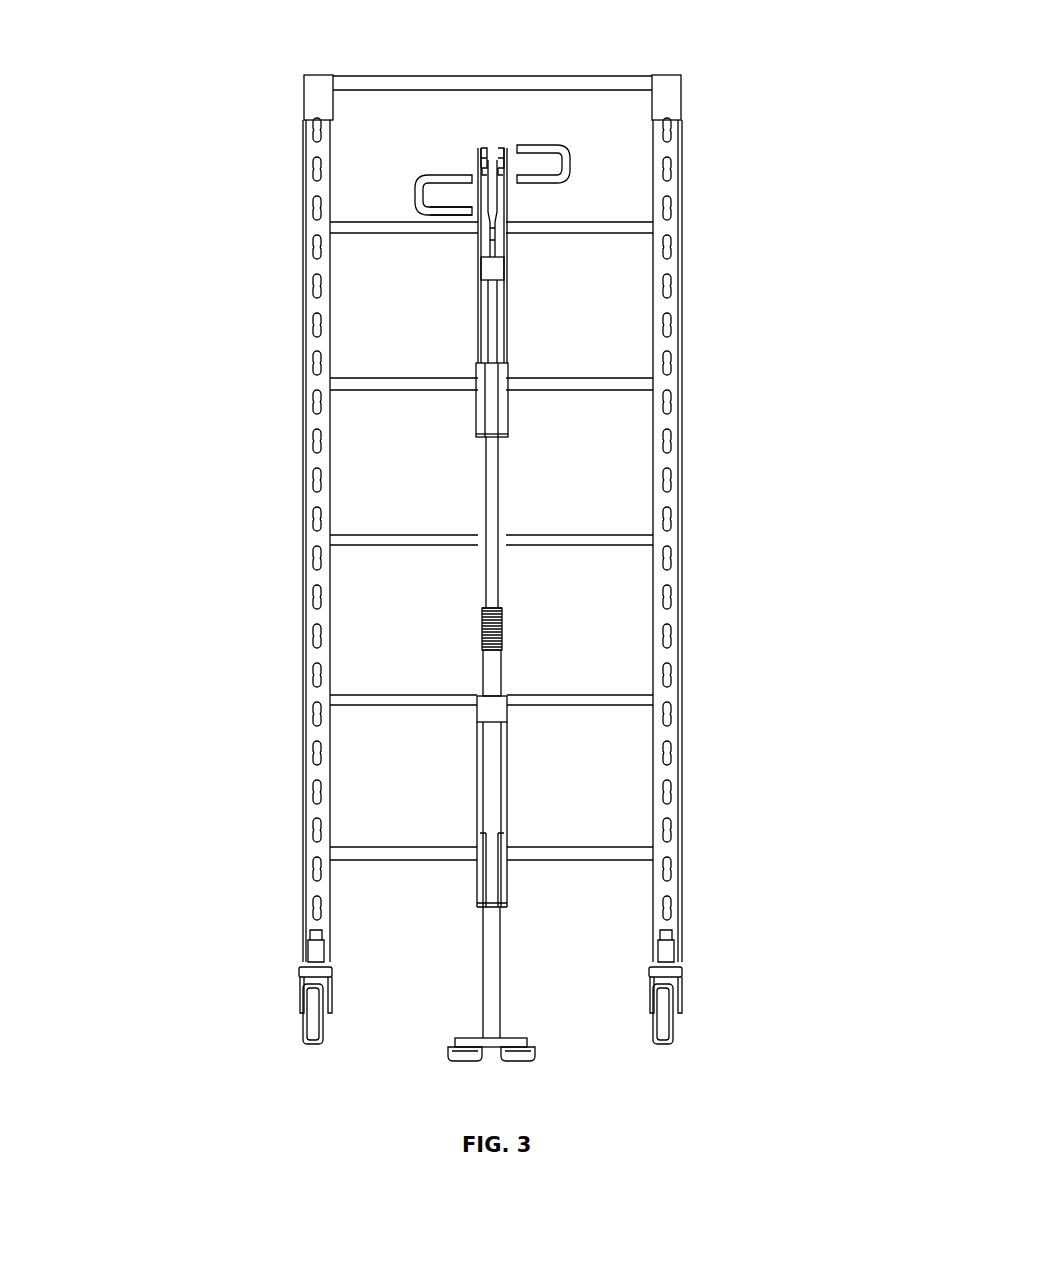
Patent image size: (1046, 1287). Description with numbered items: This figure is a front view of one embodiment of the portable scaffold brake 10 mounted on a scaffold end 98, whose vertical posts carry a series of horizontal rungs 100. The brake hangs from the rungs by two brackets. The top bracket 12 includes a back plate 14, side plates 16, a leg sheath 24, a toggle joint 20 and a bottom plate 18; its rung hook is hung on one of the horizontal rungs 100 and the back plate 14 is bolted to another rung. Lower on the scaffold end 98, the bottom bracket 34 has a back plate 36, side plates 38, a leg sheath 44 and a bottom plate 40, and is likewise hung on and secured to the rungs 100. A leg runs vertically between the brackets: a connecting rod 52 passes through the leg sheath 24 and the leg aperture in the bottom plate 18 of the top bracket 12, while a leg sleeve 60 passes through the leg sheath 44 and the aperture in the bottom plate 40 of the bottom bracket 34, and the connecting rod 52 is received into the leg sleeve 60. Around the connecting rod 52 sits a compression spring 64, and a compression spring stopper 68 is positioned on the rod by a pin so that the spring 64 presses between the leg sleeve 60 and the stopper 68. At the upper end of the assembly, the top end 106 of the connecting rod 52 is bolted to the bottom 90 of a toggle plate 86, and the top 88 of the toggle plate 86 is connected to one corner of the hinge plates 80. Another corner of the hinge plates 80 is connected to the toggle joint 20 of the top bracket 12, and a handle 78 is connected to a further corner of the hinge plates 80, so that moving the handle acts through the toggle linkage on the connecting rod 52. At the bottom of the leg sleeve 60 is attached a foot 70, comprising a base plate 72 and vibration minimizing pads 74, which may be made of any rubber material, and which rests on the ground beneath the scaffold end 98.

The portable scaffold brake 10 is at (584, 490).
The top bracket 12 is at (591, 297).
The back plate 14 is at (508, 403).
The side plates 16 is at (478, 333).
The bottom plate 18 is at (508, 437).
The toggle joint 20 is at (482, 150).
The leg sheath 24 is at (492, 270).
The bottom bracket 34 is at (591, 775).
The back plate 36 is at (507, 866).
The side plates 38 is at (477, 827).
The bottom plate 40 is at (477, 908).
The leg sheath 44 is at (492, 716).
The connecting rod 52 is at (492, 347).
The leg sleeve 60 is at (492, 682).
The compression spring 64 is at (483, 628).
The compression spring stopper 68 is at (483, 609).
The foot 70 is at (603, 1048).
The base plate 72 is at (455, 1041).
The vibration minimizing pads 74 is at (450, 1055).
The handle 78 is at (522, 148).
The hinge plates 80 is at (480, 160).
The toggle plate 86 is at (465, 210).
The top of the toggle plate 88 is at (425, 181).
The bottom of the toggle plate 90 is at (490, 215).
The scaffold end 98 is at (688, 170).
The horizontal rungs 100 is at (333, 385).
The top end of the connecting rod 106 is at (498, 232).